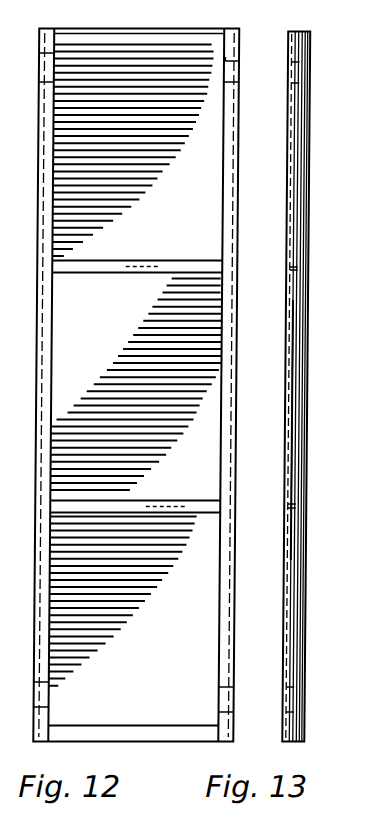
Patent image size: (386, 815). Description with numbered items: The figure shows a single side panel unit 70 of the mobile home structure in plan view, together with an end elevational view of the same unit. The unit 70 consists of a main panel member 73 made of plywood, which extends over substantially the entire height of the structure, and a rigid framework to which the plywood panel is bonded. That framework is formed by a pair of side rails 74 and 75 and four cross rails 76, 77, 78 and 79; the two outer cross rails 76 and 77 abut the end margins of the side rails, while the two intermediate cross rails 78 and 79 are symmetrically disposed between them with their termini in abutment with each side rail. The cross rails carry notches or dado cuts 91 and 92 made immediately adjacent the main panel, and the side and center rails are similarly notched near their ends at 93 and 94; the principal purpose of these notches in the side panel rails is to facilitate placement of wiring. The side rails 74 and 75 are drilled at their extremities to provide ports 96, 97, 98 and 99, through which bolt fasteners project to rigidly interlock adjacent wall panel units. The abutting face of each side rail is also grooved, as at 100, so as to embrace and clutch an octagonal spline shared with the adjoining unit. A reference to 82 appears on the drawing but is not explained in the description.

In FIG. 12, the unit 70 is at (198, 33).
In FIG. 12, the main panel member 73 is at (90, 331).
In FIG. 12, the side rail 74 is at (46, 332).
In FIG. 12, the side rail 75 is at (234, 318).
In FIG. 12, the cross rail 76 is at (127, 39).
In FIG. 12, the cross rail 77 is at (99, 740).
In FIG. 12, the cross rail 78 is at (131, 262).
In FIG. 13, the cross rail 78 is at (291, 267).
In FIG. 12, the cross rail 79 is at (199, 503).
In FIG. 13, the cross rail 79 is at (292, 506).
In FIG. 12, the stile reinforcing strip 82 is at (22, 385).
In FIG. 12, the dado cut 91 is at (171, 262).
In FIG. 13, the dado cut 91 is at (300, 269).
In FIG. 12, the dado cut 92 is at (157, 503).
In FIG. 13, the dado cut 92 is at (300, 508).
In FIG. 12, the notch 93 is at (229, 98).
In FIG. 13, the notch 93 is at (300, 84).
In FIG. 12, the notch 94 is at (224, 688).
In FIG. 13, the notch 94 is at (298, 687).
In FIG. 12, the port 96 is at (48, 52).
In FIG. 12, the port 97 is at (44, 722).
In FIG. 12, the port 98 is at (230, 60).
In FIG. 13, the port 98 is at (297, 62).
In FIG. 12, the port 99 is at (227, 712).
In FIG. 13, the port 99 is at (299, 712).
In FIG. 12, the groove 100 is at (252, 197).
In FIG. 13, the groove 100 is at (296, 432).